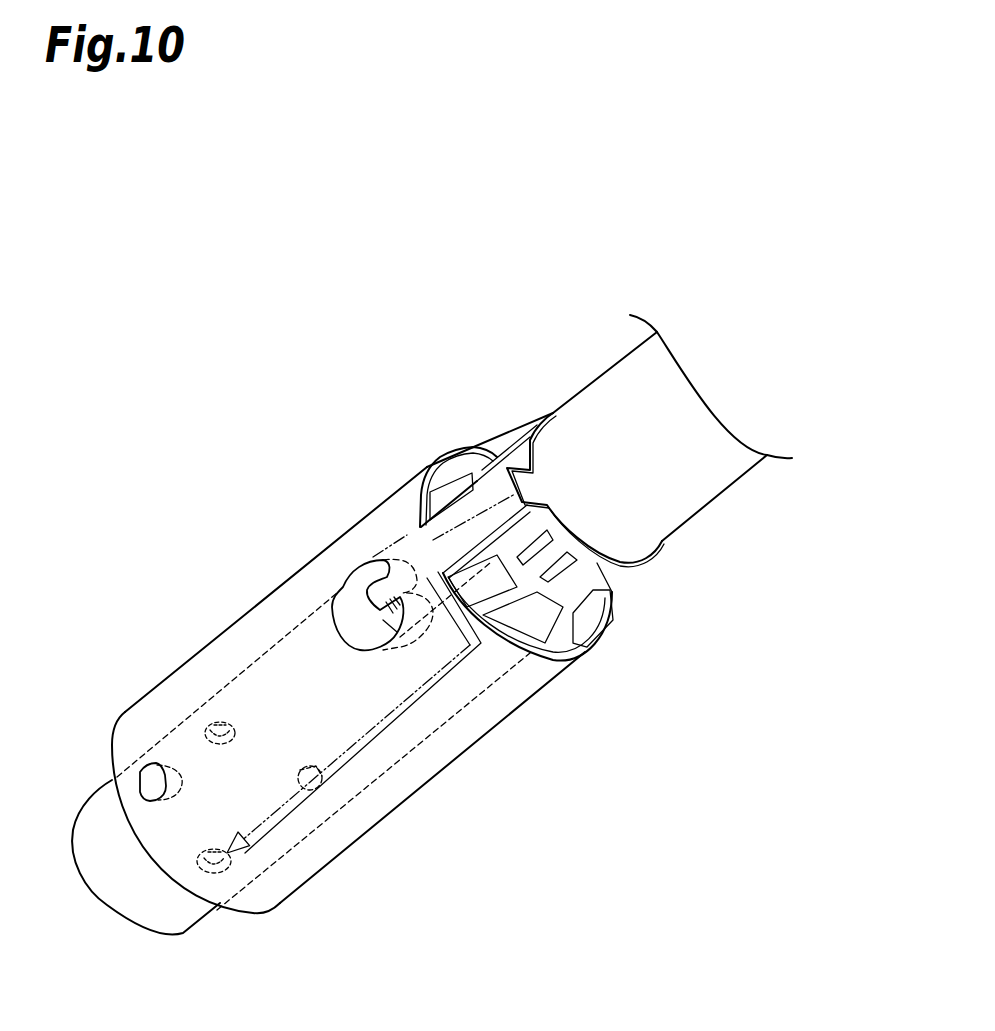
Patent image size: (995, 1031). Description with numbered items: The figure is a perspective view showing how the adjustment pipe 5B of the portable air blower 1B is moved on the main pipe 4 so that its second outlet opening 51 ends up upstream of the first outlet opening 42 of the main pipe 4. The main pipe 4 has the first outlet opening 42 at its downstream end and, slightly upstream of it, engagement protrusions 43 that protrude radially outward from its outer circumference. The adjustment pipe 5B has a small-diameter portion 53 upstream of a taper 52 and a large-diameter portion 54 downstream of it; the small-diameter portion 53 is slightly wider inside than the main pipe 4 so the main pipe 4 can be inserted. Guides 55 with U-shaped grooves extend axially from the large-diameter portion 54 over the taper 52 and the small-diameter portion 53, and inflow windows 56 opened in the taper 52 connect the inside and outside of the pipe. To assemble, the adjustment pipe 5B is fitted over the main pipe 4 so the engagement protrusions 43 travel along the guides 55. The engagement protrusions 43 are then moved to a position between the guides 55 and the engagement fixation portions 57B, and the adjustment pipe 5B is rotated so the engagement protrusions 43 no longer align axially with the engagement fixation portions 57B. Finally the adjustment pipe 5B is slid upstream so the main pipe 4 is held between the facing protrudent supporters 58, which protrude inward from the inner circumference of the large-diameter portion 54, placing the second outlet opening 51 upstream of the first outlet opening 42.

The portable air blower 1B is at (353, 301).
The main pipe 4 is at (678, 490).
The adjustment pipe 5B is at (479, 834).
The first outlet opening 42 is at (106, 908).
The engagement protrusions 43 is at (215, 722).
The second outlet opening 51 is at (110, 760).
The taper 52 is at (453, 468).
The small-diameter portion 53 is at (596, 573).
The large-diameter portion 54 is at (285, 598).
The guides 55 is at (495, 490).
The inflow windows 56 is at (457, 562).
The engagement fixation portions 57B is at (397, 555).
The protrudent supporters 58 is at (178, 766).